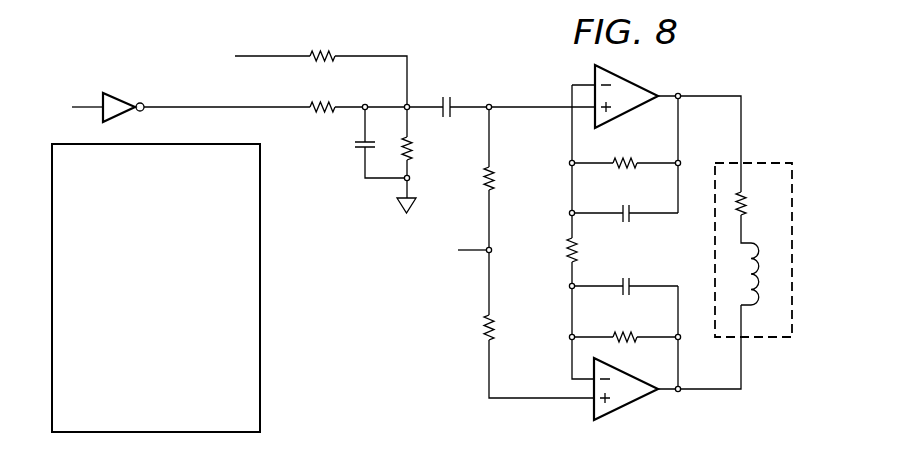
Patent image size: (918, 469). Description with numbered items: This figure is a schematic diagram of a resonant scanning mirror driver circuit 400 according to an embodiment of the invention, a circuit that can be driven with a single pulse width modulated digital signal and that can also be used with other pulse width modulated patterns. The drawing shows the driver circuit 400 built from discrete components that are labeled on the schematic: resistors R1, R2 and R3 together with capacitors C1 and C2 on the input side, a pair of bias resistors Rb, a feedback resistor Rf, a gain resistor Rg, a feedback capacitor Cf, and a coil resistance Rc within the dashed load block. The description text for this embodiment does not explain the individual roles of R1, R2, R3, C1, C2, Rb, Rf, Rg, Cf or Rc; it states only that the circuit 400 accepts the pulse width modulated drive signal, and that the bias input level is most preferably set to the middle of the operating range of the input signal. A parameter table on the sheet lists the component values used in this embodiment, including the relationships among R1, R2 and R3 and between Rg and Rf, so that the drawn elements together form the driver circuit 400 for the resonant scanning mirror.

The resonant scanning mirror driver circuit 400 is at (792, 89).
The amplitude reference resistor R1 is at (322, 43).
The shunt resistor R2 is at (420, 148).
The PWM series resistor R3 is at (322, 95).
The filter capacitor C1 is at (352, 142).
The coupling capacitor C2 is at (448, 95).
The bias resistor Rb is at (476, 253).
The feedback resistor Rf is at (625, 237).
The gain resistor Rg is at (558, 249).
The feedback capacitor Cf is at (627, 237).
The coil resistance Rc is at (753, 203).